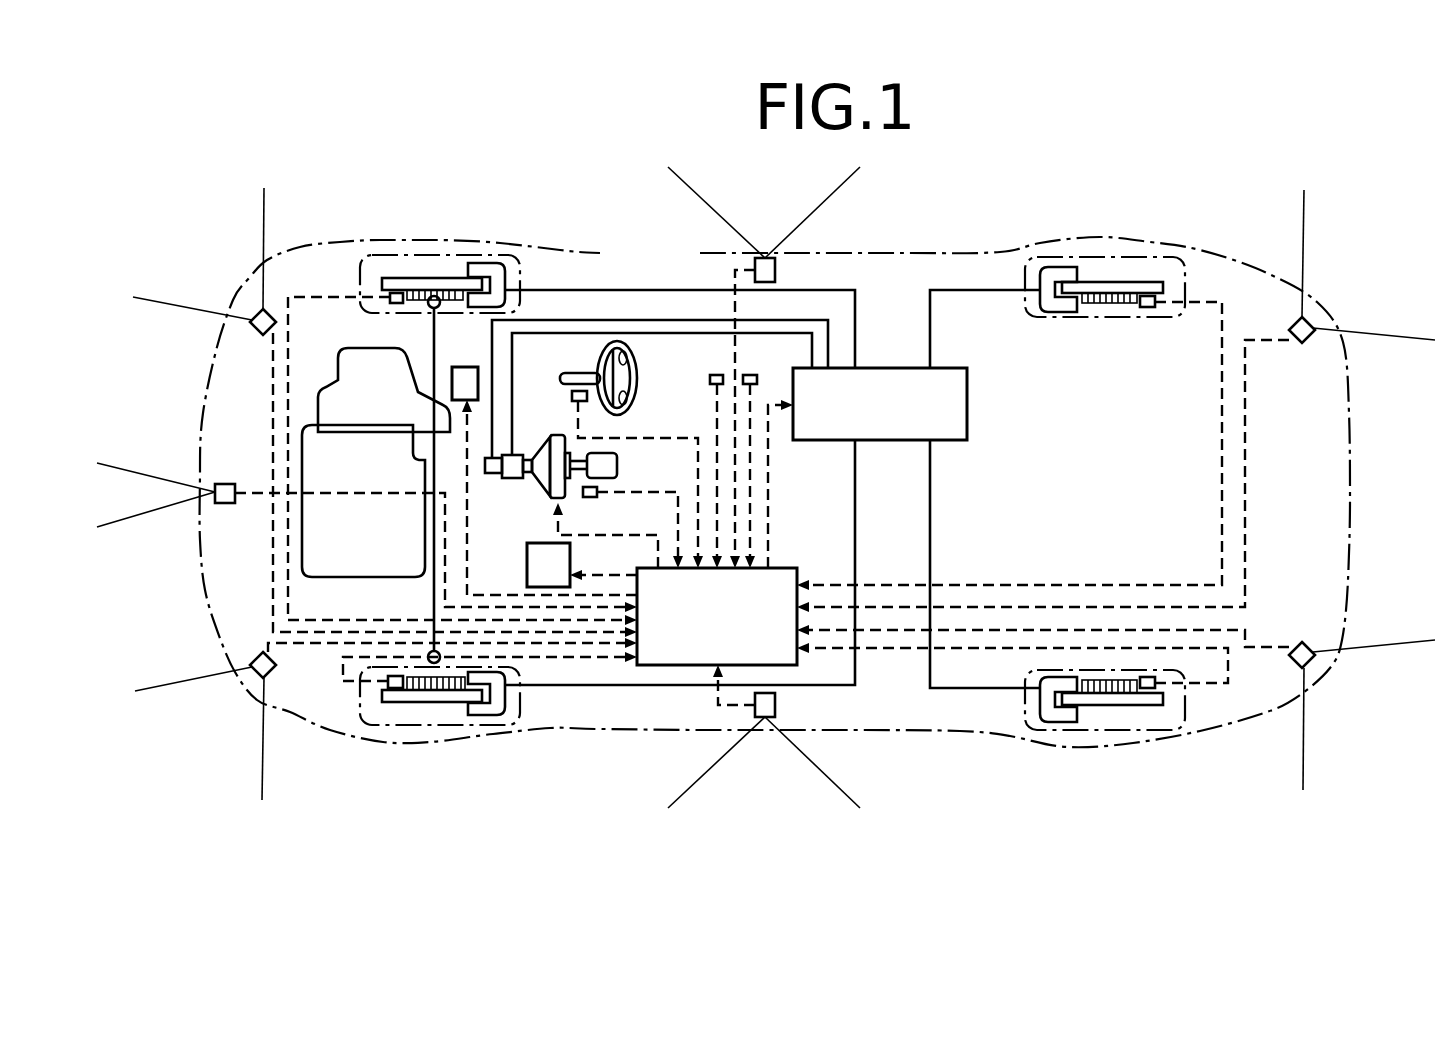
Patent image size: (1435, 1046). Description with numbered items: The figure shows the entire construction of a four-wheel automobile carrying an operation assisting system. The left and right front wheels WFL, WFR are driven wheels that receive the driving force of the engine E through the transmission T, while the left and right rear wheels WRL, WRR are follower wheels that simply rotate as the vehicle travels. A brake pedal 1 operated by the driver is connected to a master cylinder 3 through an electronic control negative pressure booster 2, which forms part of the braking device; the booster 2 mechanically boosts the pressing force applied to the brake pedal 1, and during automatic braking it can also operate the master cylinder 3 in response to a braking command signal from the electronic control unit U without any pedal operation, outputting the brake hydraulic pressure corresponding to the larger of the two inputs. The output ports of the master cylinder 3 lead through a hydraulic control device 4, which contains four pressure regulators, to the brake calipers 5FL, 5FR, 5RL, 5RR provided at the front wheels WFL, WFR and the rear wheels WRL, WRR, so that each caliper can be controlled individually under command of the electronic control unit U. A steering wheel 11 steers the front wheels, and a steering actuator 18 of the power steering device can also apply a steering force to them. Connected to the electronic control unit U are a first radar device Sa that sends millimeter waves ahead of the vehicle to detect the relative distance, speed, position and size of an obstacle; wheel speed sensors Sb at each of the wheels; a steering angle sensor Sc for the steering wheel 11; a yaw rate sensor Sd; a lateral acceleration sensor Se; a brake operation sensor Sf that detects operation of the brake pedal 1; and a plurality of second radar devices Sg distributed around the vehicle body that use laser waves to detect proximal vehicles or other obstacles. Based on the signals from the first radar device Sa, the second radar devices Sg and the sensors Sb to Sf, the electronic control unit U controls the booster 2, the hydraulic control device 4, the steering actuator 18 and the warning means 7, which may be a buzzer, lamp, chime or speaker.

The brake pedal 1 is at (607, 465).
The electronic control negative pressure booster 2 is at (555, 490).
The master cylinder 3 is at (495, 470).
The hydraulic control device 4 is at (869, 426).
The warning means 7 is at (539, 583).
The steering wheel 11 is at (620, 380).
The steering actuator 18 is at (463, 367).
The engine E is at (351, 540).
The transmission T is at (357, 404).
The electronic control unit U is at (703, 638).
The first radar device Sa is at (228, 503).
The wheel speed sensors Sb is at (390, 298).
The steering angle sensor Sc is at (572, 396).
The yaw rate sensor Sd is at (714, 375).
The lateral acceleration sensor Se is at (750, 375).
The brake operation sensor Sf is at (598, 497).
The second radar devices Sg is at (261, 336).
The right front wheel WFR is at (405, 250).
The left front wheel WFL is at (410, 738).
The right rear wheel WRR is at (1092, 255).
The left rear wheel WRL is at (1090, 732).
The brake caliper 5FR is at (487, 255).
The brake caliper 5FL is at (500, 728).
The brake caliper 5RR is at (1036, 252).
The brake caliper 5RL is at (1042, 730).